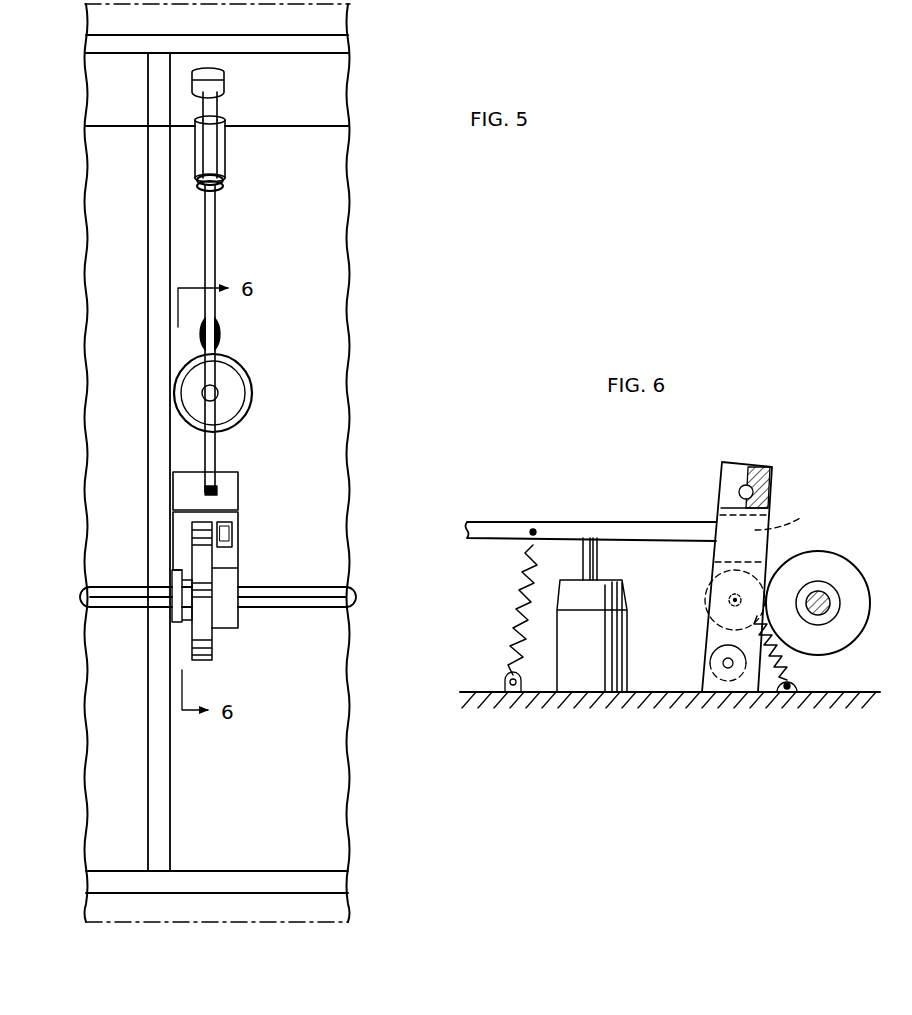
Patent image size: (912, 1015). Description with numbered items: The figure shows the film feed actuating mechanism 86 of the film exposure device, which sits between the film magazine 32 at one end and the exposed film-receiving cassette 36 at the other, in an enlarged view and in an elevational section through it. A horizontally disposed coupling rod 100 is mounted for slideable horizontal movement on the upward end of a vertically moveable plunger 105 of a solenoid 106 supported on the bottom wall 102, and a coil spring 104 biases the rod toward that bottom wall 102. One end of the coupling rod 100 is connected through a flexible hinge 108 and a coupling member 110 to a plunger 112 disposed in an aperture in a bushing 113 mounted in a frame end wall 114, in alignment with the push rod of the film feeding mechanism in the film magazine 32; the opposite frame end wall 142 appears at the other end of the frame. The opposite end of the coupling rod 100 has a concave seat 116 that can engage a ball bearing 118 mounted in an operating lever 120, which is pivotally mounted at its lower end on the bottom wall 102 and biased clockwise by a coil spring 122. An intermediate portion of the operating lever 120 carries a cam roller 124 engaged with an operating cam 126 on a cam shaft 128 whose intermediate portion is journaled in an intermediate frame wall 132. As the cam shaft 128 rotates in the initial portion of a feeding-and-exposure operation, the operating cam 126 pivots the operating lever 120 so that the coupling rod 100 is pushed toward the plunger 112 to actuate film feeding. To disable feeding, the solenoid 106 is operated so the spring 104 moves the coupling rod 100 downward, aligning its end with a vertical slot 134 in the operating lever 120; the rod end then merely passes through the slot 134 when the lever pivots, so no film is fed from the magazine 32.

In FIG. 5, the film magazine 32 is at (338, 25).
In FIG. 5, the exposed film-receiving cassette 36 is at (160, 930).
In FIG. 5, the film feed actuating mechanism 86 is at (322, 303).
In FIG. 6, the film feed actuating mechanism 86 is at (557, 510).
In FIG. 5, the coupling rod 100 is at (215, 242).
In FIG. 6, the coupling rod 100 is at (505, 522).
In FIG. 5, the bottom wall 102 is at (330, 426).
In FIG. 6, the bottom wall 102 is at (545, 700).
In FIG. 5, the coil spring 104 is at (215, 327).
In FIG. 6, the coil spring 104 is at (514, 622).
In FIG. 5, the plunger 105 is at (222, 393).
In FIG. 6, the plunger 105 is at (592, 560).
In FIG. 5, the solenoid 106 is at (190, 400).
In FIG. 6, the solenoid 106 is at (620, 600).
In FIG. 5, the flexible hinge 108 is at (220, 178).
In FIG. 5, the coupling member 110 is at (208, 150).
In FIG. 5, the plunger 112 is at (215, 105).
In FIG. 5, the bushing 113 is at (222, 78).
In FIG. 5, the frame end wall 114 is at (335, 112).
In FIG. 5, the concave seat 116 is at (215, 475).
In FIG. 6, the concave seat 116 is at (717, 522).
In FIG. 5, the ball bearing 118 is at (220, 490).
In FIG. 6, the ball bearing 118 is at (753, 487).
In FIG. 6, the operating lever 120 is at (752, 470).
In FIG. 6, the coil spring 122 is at (800, 690).
In FIG. 5, the cam roller 124 is at (190, 537).
In FIG. 6, the cam roller 124 is at (705, 602).
In FIG. 5, the operating cam 126 is at (207, 640).
In FIG. 6, the operating cam 126 is at (843, 565).
In FIG. 5, the cam shaft 128 is at (297, 600).
In FIG. 6, the cam shaft 128 is at (818, 615).
In FIG. 5, the intermediate frame wall 132 is at (148, 338).
In FIG. 5, the vertical slot 134 is at (228, 540).
In FIG. 6, the vertical slot 134 is at (795, 511).
In FIG. 5, the opposite frame end wall 142 is at (268, 884).